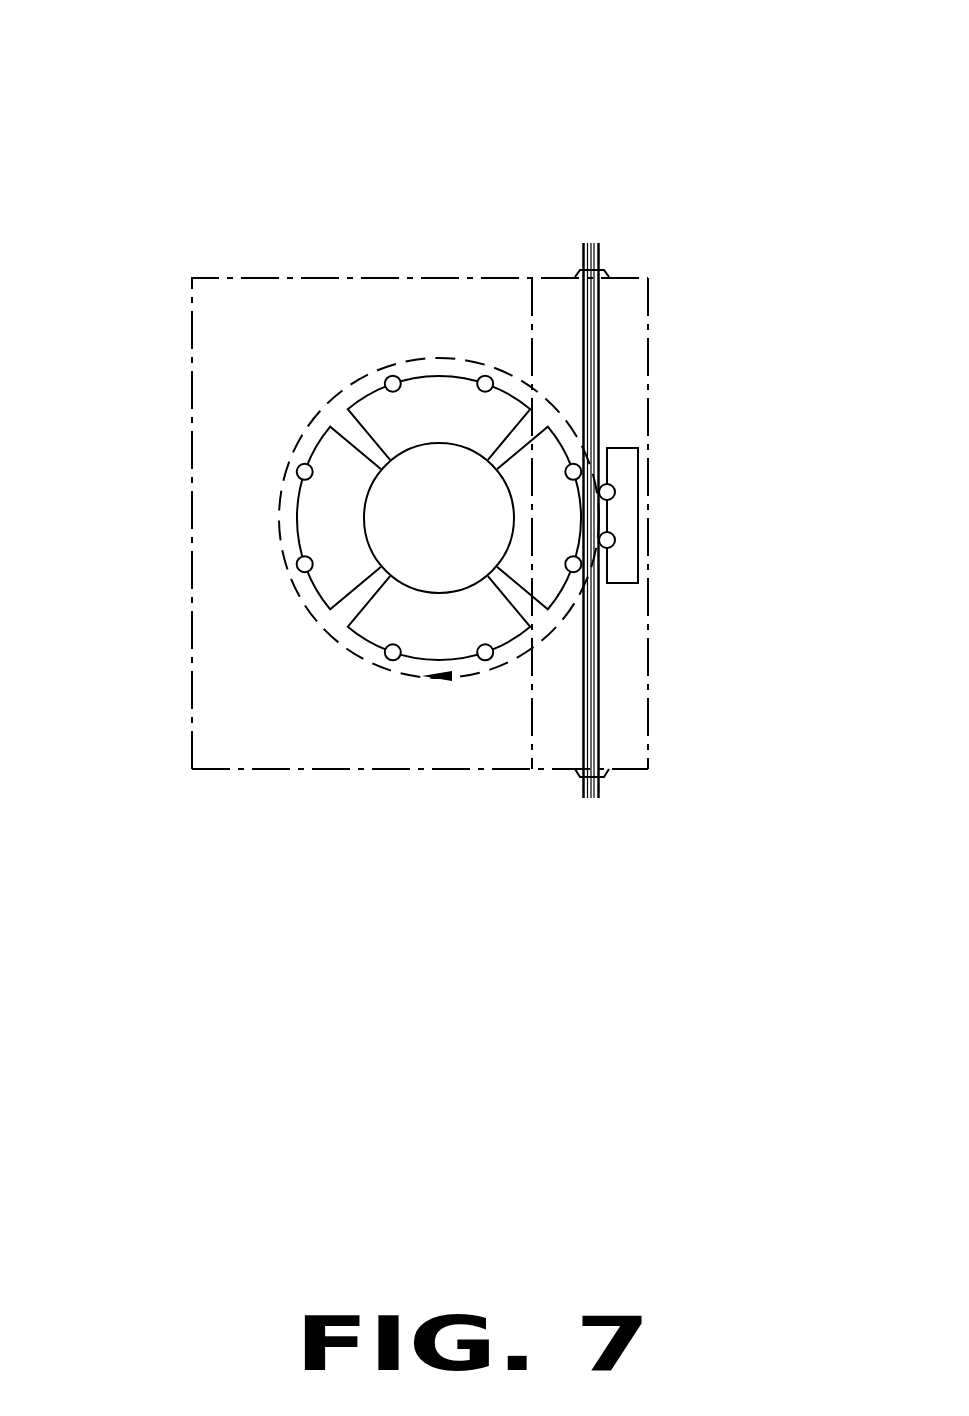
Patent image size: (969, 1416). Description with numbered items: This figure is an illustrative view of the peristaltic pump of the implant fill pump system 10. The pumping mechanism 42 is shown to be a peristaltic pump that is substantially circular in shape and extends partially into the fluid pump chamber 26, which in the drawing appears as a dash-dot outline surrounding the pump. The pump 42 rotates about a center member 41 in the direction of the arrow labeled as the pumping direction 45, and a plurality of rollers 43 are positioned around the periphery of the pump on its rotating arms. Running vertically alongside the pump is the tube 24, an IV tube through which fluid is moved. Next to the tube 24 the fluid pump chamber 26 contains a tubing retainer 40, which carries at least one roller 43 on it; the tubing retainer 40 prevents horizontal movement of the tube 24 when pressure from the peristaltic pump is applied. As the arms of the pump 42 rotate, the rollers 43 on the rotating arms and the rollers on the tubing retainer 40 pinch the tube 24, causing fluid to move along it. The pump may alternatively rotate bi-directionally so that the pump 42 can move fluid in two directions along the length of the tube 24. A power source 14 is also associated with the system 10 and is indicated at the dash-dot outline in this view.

The implant fill pump system 10 is at (162, 158).
The power source 14 is at (192, 712).
The tube 24 is at (600, 387).
The fluid pump chamber 26 is at (633, 725).
The tubing retainer 40 is at (637, 527).
The center member 41 is at (413, 545).
The pumping mechanism 42 is at (297, 515).
The roller 43 is at (607, 540).
The pumping direction 45 is at (423, 358).